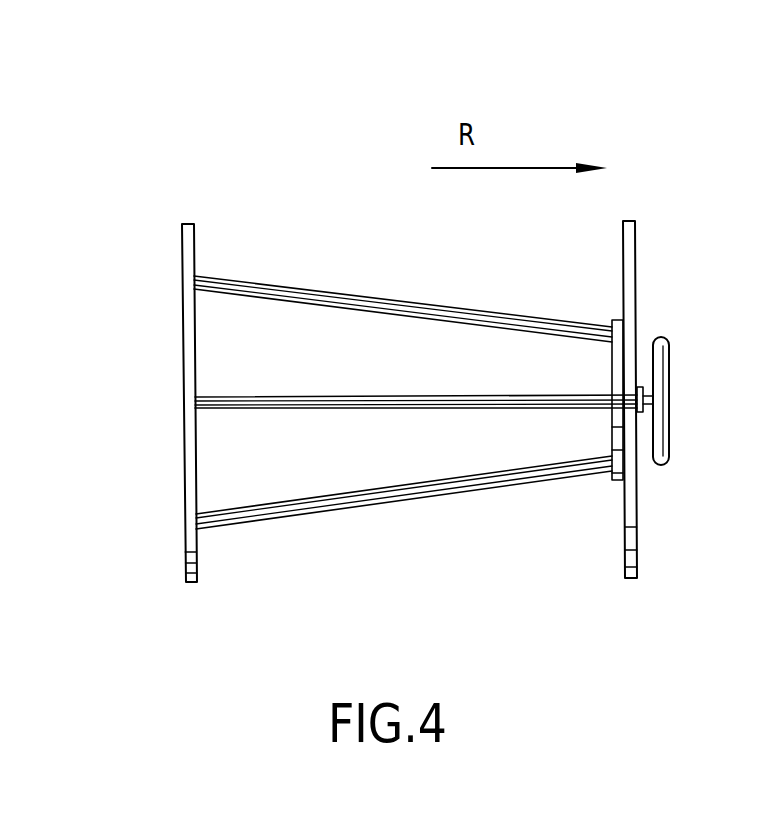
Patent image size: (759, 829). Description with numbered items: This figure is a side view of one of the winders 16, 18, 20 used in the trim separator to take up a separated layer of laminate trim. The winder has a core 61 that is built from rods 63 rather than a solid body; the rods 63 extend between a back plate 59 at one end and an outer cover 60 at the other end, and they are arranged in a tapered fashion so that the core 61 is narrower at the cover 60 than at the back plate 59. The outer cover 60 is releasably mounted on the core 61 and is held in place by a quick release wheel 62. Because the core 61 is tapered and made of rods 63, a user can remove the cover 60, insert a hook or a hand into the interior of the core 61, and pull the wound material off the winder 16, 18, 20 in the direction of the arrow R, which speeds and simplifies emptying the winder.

The winder 16 is at (150, 196).
The winder 18 is at (404, 438).
The winder 20 is at (404, 438).
The back plate 59 is at (187, 492).
The outer cover 60 is at (637, 514).
The core 61 is at (432, 531).
The quick release wheel 62 is at (668, 358).
The rods 63 is at (340, 308).